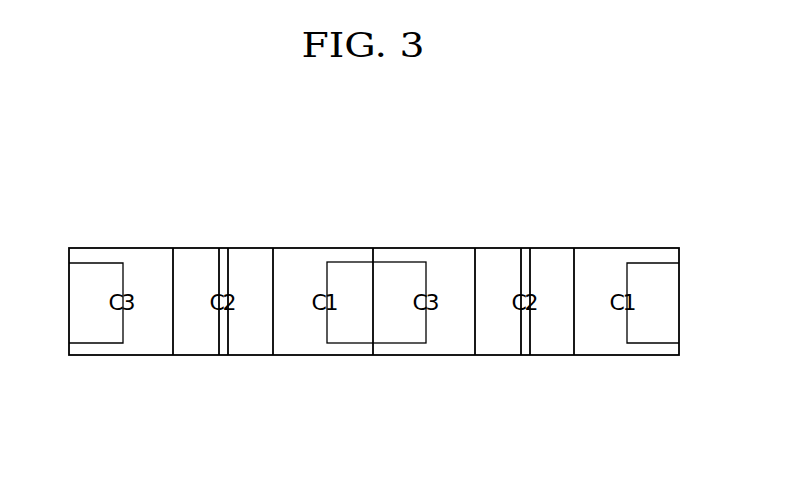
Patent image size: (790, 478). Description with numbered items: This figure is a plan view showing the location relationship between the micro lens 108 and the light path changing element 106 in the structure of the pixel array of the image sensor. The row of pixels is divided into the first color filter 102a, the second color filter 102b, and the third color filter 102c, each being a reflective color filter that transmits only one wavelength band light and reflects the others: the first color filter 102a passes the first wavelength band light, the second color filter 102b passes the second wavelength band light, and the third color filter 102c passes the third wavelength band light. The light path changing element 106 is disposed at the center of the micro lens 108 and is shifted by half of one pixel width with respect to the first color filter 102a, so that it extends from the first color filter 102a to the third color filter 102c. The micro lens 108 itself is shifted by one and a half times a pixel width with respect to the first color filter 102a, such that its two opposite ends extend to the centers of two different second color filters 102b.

The first color filter 102a is at (328, 355).
The second color filter 102b is at (200, 355).
The third color filter 102c is at (117, 355).
The light path changing element 106 is at (402, 262).
The micro lens 108 is at (519, 243).